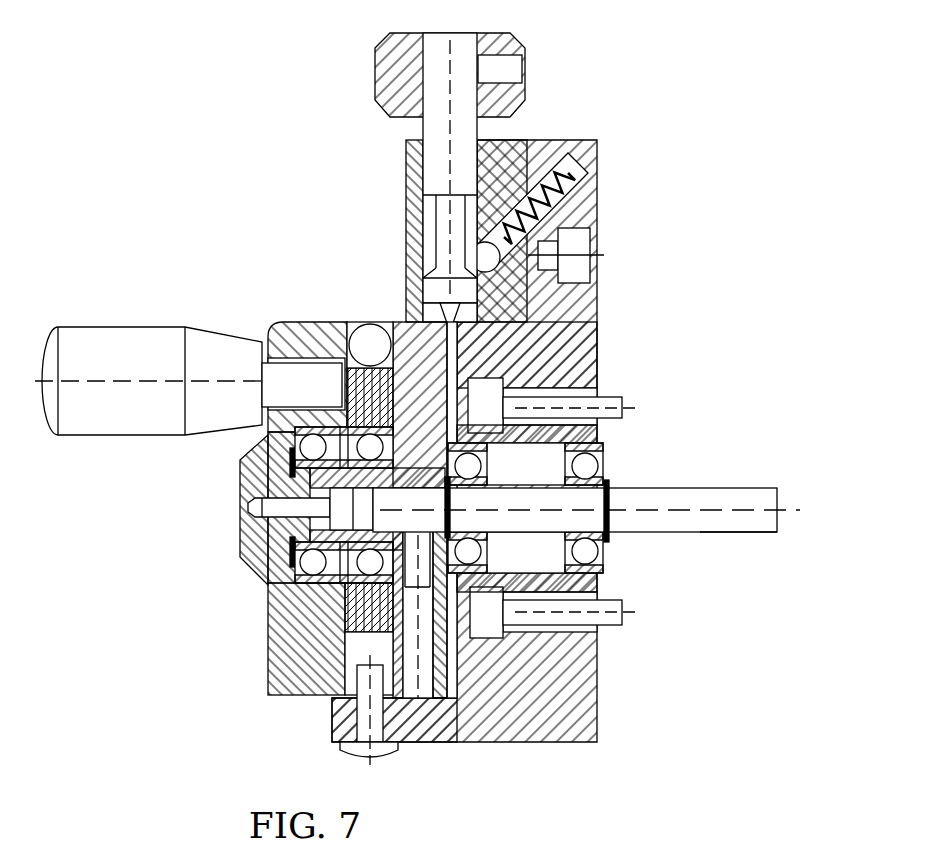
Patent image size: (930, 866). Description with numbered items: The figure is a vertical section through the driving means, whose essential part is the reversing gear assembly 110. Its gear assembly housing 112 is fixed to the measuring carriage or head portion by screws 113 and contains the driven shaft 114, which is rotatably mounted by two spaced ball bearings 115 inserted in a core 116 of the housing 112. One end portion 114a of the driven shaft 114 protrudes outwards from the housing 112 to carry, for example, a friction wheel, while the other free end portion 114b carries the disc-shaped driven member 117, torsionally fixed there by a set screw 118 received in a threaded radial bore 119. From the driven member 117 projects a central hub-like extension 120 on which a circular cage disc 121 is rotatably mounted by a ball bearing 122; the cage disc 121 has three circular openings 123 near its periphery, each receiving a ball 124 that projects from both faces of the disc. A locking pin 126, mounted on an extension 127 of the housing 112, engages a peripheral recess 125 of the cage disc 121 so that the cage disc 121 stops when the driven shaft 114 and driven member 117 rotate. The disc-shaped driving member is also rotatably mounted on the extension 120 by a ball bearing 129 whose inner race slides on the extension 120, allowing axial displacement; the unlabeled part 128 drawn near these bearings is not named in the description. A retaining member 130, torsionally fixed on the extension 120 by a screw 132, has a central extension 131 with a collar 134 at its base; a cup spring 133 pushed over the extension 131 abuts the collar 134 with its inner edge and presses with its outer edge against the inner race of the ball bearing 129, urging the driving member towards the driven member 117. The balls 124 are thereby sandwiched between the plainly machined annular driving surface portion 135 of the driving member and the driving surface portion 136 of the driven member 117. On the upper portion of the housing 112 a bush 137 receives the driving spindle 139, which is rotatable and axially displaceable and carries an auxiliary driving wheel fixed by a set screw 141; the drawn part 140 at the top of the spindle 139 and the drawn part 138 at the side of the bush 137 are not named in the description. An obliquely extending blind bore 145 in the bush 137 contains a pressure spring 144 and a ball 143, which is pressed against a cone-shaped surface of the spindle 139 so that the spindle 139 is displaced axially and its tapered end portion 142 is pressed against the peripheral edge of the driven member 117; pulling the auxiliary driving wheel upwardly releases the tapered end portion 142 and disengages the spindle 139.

The reversing gear assembly 110 is at (248, 182).
The gear assembly housing 112 is at (570, 700).
The screws 113 is at (605, 405).
The driven shaft 114 is at (650, 500).
The end portion of the driven shaft 114a is at (690, 522).
The free end portion of the driven shaft 114b is at (585, 440).
The ball bearings 115 is at (600, 470).
The core 116 is at (590, 585).
The driven member 117 is at (430, 598).
The set screw 118 is at (500, 598).
The threaded radial bore 119 is at (560, 702).
The hub-like extension 120 is at (275, 578).
The cage disc 121 is at (470, 365).
The ball bearing 122 is at (320, 640).
The circular openings 123 is at (300, 335).
The balls 124 is at (335, 348).
The recess 125 is at (350, 668).
The locking pin 126 is at (380, 755).
The extension of the gear assembly housing 127 is at (460, 728).
The bearings 128 is at (365, 570).
The ball bearing 129 is at (262, 432).
The retaining member 130 is at (262, 457).
The central extension 131 is at (298, 522).
The screw 132 is at (305, 507).
The cup spring 133 is at (265, 558).
The collar 134 is at (245, 478).
The driving surface portion 135 is at (362, 326).
The driving surface portion 136 is at (412, 330).
The bush 137 is at (507, 155).
The plug 138 is at (585, 247).
The driving spindle 139 is at (435, 130).
The adjusting cap 140 is at (388, 70).
The set screw 141 is at (500, 68).
The tapered end portion 142 is at (456, 340).
The ball 143 is at (478, 255).
The pressure spring 144 is at (560, 190).
The blind bore 145 is at (568, 150).